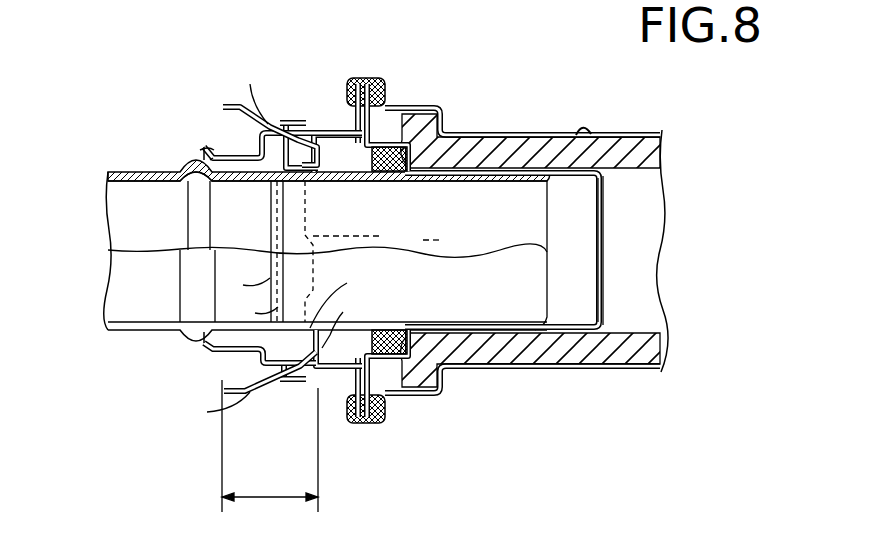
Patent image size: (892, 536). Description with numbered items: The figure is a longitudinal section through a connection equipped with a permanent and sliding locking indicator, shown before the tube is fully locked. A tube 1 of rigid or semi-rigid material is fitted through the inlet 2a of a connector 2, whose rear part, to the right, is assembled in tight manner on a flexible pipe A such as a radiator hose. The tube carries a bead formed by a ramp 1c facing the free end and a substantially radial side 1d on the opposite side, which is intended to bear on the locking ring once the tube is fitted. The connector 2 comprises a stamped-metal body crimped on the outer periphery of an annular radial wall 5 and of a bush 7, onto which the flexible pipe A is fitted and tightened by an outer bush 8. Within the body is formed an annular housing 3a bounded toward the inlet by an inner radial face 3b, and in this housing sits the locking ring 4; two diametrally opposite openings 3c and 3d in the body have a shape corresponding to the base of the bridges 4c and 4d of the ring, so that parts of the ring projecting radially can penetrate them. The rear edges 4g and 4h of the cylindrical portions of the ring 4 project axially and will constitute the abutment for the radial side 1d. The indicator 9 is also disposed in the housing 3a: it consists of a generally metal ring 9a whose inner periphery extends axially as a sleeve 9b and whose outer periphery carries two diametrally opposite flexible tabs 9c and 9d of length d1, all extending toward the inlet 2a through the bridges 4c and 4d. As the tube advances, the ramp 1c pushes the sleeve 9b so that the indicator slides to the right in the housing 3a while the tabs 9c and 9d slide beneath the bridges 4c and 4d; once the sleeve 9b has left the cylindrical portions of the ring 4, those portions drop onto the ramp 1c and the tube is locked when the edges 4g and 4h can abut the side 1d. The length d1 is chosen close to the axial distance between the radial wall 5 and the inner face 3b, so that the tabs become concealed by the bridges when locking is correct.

The tube 1 is at (359, 190).
The ramp 1c is at (252, 306).
The radial side of the bead 1d is at (247, 271).
The connector 2 is at (439, 103).
The inlet of the connector 2a is at (218, 152).
The annular housing 3a is at (339, 158).
The inner radial face of the housing 3b is at (254, 178).
The opening 3c is at (262, 141).
The opening 3d is at (262, 356).
The locking ring 4 is at (310, 107).
The bridge 4c is at (305, 118).
The bridge 4d is at (293, 388).
The rear edge of cylindrical portion 4g is at (372, 232).
The rear edge of cylindrical portion 4h is at (455, 234).
The annular radial wall 5 is at (365, 334).
The bush 7 is at (583, 178).
The outer bush 8 is at (528, 132).
The permanent locking indicator 9 is at (223, 104).
The ring of the indicator 9a is at (348, 319).
The sleeve 9b is at (344, 296).
The tab 9c is at (246, 90).
The tab 9d is at (210, 410).
The flexible pipe A is at (628, 147).
The length of the tabs d1 is at (270, 446).